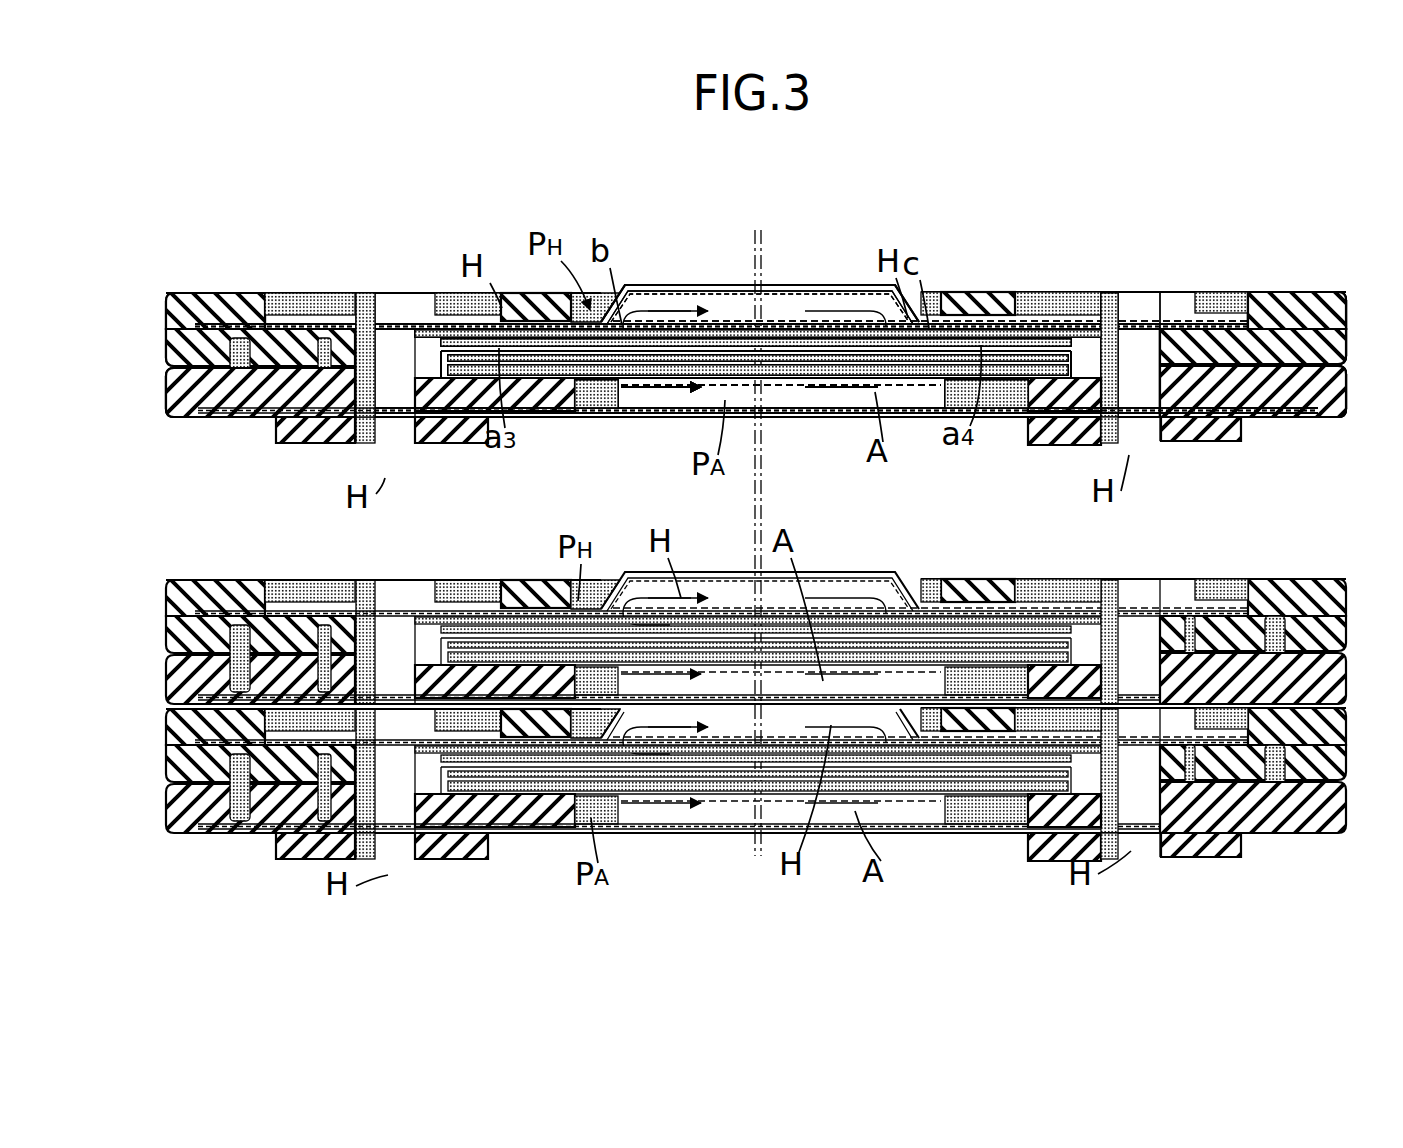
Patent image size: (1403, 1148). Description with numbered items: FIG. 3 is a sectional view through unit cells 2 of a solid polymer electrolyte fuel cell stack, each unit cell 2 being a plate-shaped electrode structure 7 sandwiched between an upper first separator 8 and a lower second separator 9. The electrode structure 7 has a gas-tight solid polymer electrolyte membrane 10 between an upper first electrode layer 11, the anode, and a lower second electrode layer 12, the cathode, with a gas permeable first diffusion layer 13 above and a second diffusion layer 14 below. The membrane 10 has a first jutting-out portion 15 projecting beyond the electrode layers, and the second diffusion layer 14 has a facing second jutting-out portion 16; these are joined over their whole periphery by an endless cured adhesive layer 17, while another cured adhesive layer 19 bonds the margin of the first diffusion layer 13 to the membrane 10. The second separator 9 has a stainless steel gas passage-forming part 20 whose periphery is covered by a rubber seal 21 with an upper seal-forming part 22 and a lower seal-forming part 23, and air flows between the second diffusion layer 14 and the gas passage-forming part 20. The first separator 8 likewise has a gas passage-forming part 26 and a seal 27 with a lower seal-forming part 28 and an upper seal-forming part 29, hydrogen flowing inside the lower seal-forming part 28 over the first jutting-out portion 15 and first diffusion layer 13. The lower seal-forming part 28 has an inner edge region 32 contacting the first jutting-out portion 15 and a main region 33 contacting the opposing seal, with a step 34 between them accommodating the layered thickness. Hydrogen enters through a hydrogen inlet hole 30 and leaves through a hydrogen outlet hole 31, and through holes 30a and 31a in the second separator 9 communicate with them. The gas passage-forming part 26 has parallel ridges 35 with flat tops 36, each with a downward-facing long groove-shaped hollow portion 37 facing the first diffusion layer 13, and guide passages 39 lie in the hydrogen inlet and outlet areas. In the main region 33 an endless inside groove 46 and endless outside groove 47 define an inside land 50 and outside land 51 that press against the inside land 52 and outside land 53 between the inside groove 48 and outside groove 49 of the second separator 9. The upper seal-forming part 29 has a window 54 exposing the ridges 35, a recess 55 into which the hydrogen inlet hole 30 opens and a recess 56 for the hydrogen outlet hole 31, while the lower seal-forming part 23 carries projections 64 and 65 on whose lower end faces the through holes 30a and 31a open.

The unit cell 2 is at (767, 240).
The electrode structure 7 is at (814, 314).
The first separator 8 is at (237, 280).
The second separator 9 is at (184, 435).
The solid polymer electrolyte membrane 10 is at (683, 333).
The first electrode layer 11 is at (779, 330).
The second electrode layer 12 is at (773, 404).
The first diffusion layer 13 is at (720, 314).
The second diffusion layer 14 is at (790, 382).
The first jutting-out portion 15 is at (963, 342).
The second jutting-out portion 16 is at (1040, 395).
The cured adhesive layer 17 is at (1003, 353).
The cured adhesive layer 19 is at (644, 330).
The gas passage-forming part 20 is at (653, 414).
The seal 21 is at (458, 444).
The upper seal-forming part 22 is at (277, 332).
The lower seal-forming part 23 is at (200, 412).
The gas passage-forming part 26 is at (612, 323).
The seal 27 is at (510, 282).
The lower seal-forming part 28 is at (413, 325).
The upper seal-forming part 29 is at (222, 300).
The hydrogen inlet hole 30 is at (377, 470).
The through hole 30a is at (357, 412).
The hydrogen outlet hole 31 is at (1122, 463).
The through hole 31a is at (1146, 400).
The inner edge region 32 is at (541, 347).
The main region 33 is at (1220, 380).
The step 34 is at (437, 298).
The ridges 35 is at (688, 274).
The flat top 36 is at (660, 322).
The long groove-shaped hollow portion 37 is at (857, 282).
The guide passages 39 is at (1050, 340).
The endless inside groove 46 is at (1182, 327).
The endless outside groove 47 is at (1277, 303).
The endless inside groove 48 is at (1183, 358).
The endless outside groove 49 is at (1266, 390).
The inside land 50 is at (1250, 395).
The outside land 51 is at (1316, 330).
The inside land 52 is at (1225, 303).
The outside land 53 is at (1310, 412).
The window 54 is at (925, 289).
The recess 55 is at (316, 330).
The recess 56 is at (1085, 328).
The projection 64 is at (295, 403).
The projection 65 is at (1019, 410).